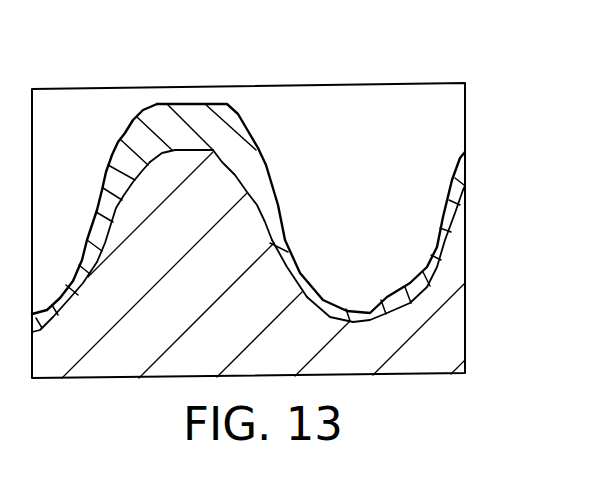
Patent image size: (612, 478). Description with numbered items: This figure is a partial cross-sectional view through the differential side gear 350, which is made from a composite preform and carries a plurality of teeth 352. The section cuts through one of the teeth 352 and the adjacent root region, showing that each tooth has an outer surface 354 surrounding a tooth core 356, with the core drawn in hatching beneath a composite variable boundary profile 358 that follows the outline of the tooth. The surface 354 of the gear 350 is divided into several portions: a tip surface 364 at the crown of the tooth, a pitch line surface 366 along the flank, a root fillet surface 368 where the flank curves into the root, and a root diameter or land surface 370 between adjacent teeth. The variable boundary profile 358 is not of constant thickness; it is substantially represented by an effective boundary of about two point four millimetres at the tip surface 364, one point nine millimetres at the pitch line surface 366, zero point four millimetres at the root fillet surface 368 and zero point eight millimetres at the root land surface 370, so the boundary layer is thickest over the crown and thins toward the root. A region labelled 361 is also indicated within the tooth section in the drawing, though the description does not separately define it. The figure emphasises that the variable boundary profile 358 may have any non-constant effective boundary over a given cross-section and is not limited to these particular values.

The differential side gear 350 is at (352, 153).
The teeth 352 is at (112, 130).
The surface 354 is at (250, 128).
The tooth core 356 is at (178, 318).
The variable boundary profile 358 is at (128, 193).
The tooth core region 361 is at (155, 233).
The tip surface 364 is at (193, 104).
The pitch line surface 366 is at (278, 182).
The root fillet surface 368 is at (283, 252).
The root land surface 370 is at (350, 306).